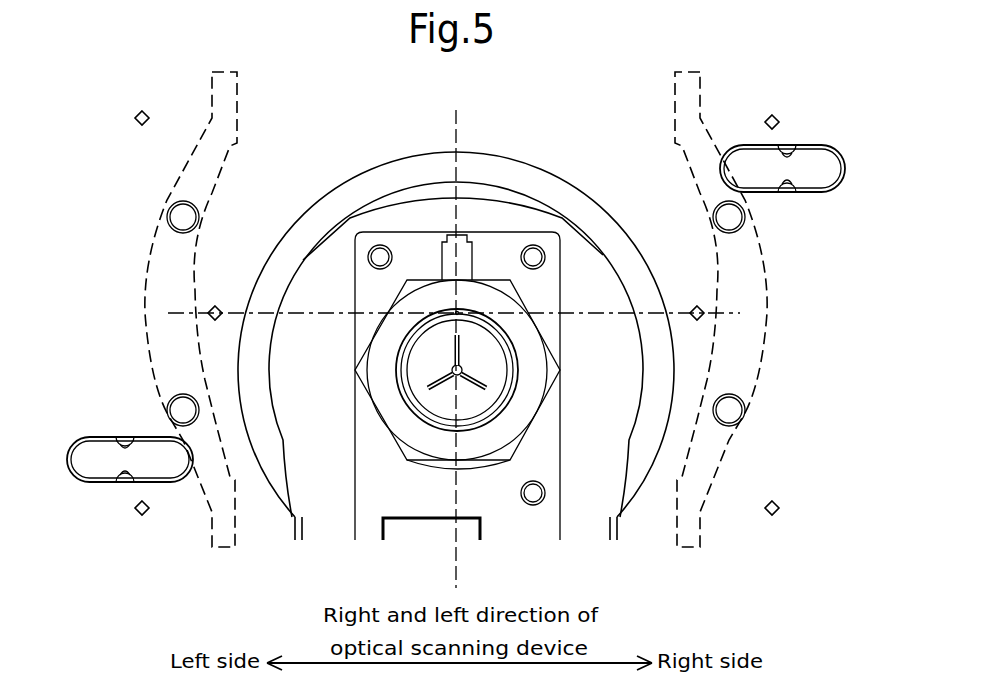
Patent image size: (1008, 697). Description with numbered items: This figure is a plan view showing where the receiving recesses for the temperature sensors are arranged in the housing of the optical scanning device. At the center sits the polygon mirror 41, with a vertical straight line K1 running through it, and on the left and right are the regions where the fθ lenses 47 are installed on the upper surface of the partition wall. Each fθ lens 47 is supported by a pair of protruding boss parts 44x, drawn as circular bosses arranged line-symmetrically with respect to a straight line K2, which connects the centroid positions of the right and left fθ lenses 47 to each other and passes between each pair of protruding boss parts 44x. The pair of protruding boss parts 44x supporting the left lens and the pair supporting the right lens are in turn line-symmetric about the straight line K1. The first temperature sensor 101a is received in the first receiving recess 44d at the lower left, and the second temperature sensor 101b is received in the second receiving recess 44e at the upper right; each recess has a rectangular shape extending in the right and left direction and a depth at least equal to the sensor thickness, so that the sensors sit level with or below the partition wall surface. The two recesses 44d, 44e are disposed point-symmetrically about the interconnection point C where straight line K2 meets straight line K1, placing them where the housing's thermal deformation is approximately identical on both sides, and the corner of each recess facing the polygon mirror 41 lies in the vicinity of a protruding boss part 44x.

The polygon mirror 41 is at (427, 297).
The fθ lens 47 is at (165, 190).
The protruding boss parts 44x is at (165, 215).
The first receiving recess 44d is at (75, 457).
The second receiving recess 44e is at (843, 165).
The first temperature sensor 101a is at (100, 467).
The second temperature sensor 101b is at (810, 168).
The straight line K1 is at (458, 135).
The straight line K2 is at (636, 318).
The interconnection point C is at (457, 313).